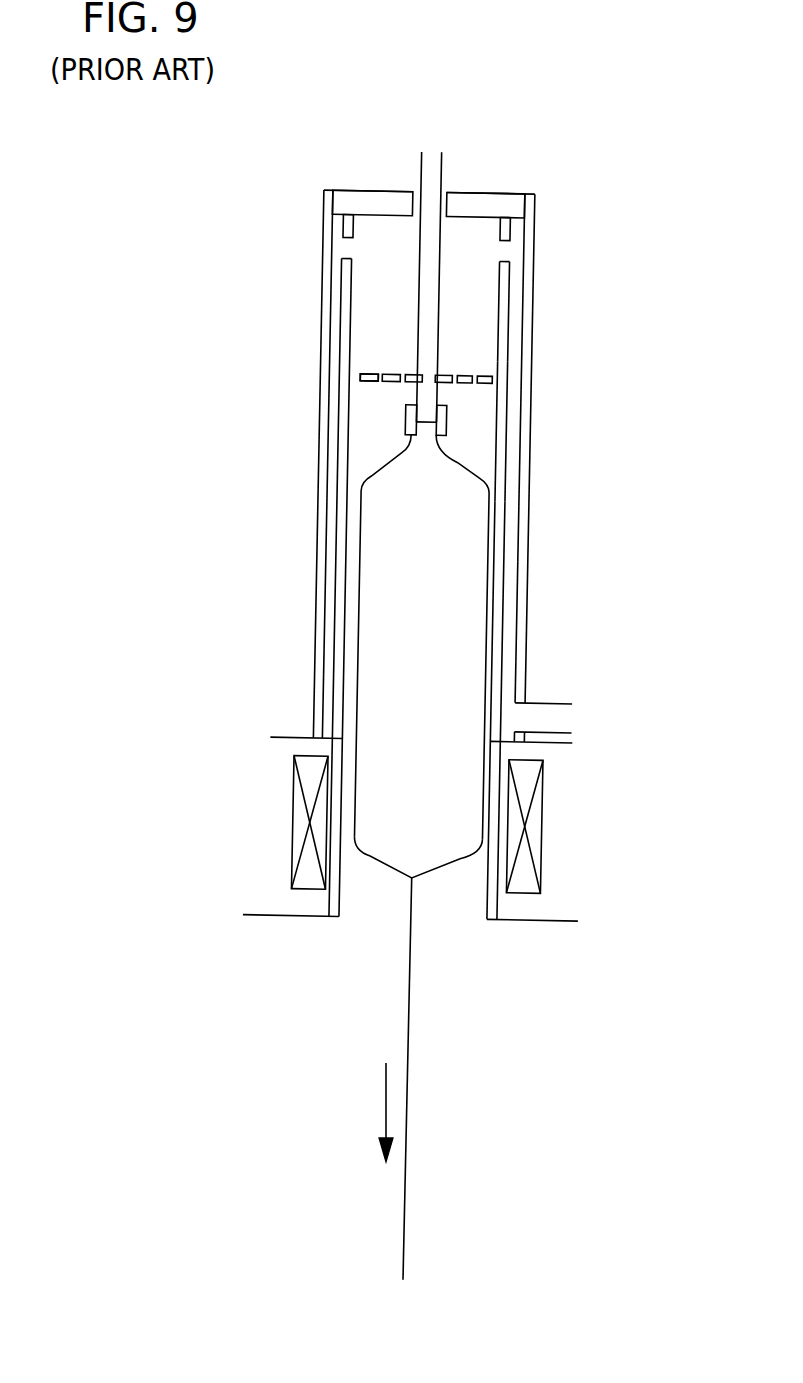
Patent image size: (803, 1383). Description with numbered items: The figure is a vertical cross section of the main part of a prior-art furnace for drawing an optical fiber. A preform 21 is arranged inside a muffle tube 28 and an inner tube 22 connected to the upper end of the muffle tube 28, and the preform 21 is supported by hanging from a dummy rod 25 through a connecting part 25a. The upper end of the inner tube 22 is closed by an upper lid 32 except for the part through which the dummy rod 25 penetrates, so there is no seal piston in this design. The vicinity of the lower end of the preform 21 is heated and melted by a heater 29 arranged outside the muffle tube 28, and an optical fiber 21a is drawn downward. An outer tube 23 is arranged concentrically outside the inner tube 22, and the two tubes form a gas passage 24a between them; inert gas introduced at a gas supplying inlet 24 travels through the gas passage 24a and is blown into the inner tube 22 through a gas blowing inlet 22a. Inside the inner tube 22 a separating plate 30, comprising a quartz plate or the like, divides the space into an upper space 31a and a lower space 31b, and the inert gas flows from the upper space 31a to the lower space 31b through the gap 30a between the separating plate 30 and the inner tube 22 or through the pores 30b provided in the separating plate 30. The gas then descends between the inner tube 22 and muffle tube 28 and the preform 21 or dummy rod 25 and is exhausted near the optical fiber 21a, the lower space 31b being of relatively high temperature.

The preform 21 is at (455, 546).
The optical fiber 21a is at (407, 1113).
The inner tube 22 is at (507, 342).
The gas blowing inlet 22a is at (510, 249).
The outer tube 23 is at (530, 468).
The gas supplying inlet 24 is at (528, 722).
The gas passage 24a is at (513, 605).
The dummy rod 25 is at (427, 283).
The connecting part 25a is at (408, 432).
The muffle tube 28 is at (487, 865).
The heater 29 is at (535, 835).
The separating plate 30 is at (368, 387).
The gap 30a is at (362, 383).
The pores 30b is at (398, 377).
The upper space 31a is at (490, 306).
The lower space 31b is at (473, 416).
The upper lid 32 is at (488, 208).